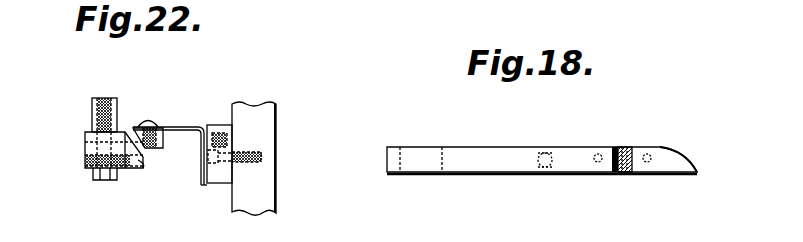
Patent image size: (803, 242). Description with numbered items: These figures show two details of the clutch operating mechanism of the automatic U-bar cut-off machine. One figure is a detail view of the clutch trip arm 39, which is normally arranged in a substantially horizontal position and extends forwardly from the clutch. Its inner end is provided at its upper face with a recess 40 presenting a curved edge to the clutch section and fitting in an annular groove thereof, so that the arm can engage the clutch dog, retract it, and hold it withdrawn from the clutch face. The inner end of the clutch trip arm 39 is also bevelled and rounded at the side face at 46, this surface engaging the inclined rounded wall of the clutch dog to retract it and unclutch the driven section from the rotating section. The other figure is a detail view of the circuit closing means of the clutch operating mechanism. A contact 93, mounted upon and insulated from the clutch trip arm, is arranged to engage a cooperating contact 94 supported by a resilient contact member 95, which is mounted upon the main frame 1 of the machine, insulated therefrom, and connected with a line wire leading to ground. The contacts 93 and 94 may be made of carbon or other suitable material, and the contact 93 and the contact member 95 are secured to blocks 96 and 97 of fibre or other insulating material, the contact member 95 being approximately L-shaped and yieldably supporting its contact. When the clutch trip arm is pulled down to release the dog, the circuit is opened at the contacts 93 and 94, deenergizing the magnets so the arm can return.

In FIG. 22, the main frame 1 is at (258, 142).
In FIG. 22, the contact 93 is at (137, 166).
In FIG. 22, the cooperating contact 94 is at (160, 144).
In FIG. 22, the resilient contact member 95 is at (192, 130).
In FIG. 22, the block 96 is at (98, 142).
In FIG. 22, the block 97 is at (220, 173).
In FIG. 18, the clutch trip arm 39 is at (518, 163).
In FIG. 18, the recess 40 is at (660, 158).
In FIG. 18, the bevelled and rounded side face 46 is at (688, 155).